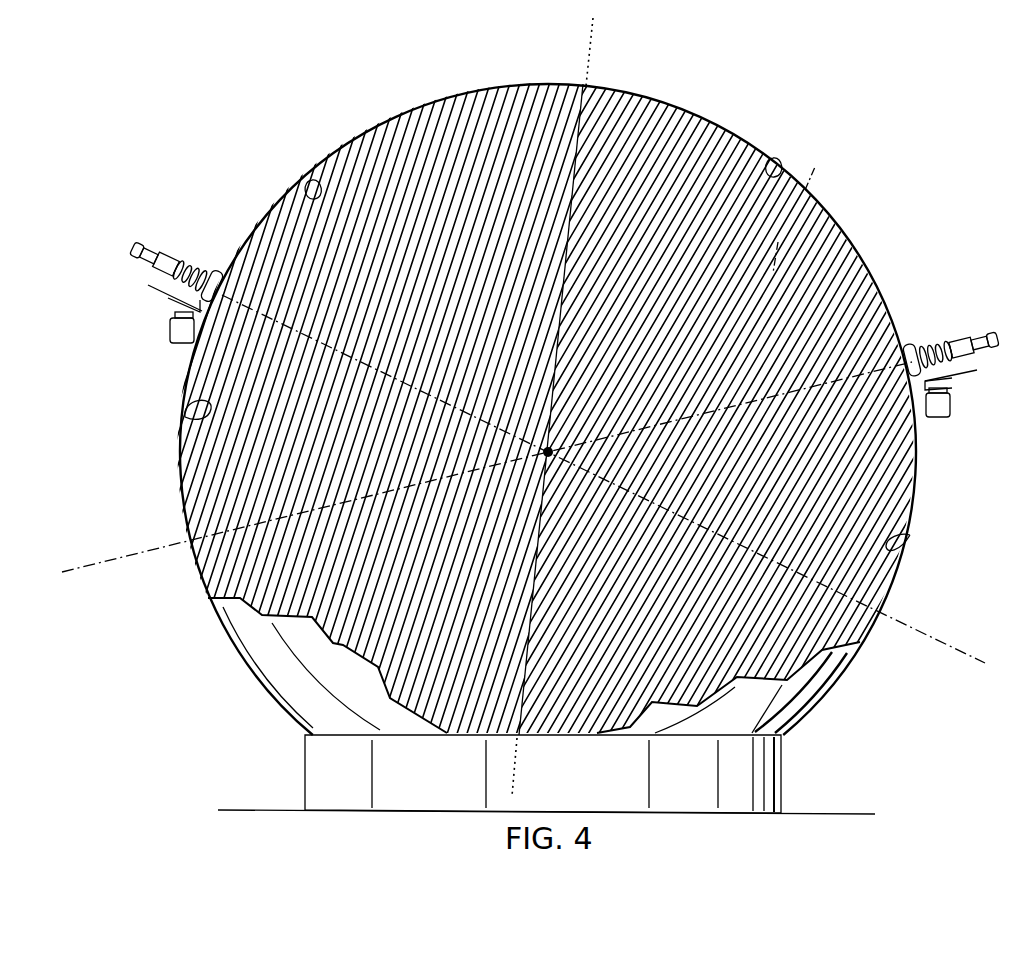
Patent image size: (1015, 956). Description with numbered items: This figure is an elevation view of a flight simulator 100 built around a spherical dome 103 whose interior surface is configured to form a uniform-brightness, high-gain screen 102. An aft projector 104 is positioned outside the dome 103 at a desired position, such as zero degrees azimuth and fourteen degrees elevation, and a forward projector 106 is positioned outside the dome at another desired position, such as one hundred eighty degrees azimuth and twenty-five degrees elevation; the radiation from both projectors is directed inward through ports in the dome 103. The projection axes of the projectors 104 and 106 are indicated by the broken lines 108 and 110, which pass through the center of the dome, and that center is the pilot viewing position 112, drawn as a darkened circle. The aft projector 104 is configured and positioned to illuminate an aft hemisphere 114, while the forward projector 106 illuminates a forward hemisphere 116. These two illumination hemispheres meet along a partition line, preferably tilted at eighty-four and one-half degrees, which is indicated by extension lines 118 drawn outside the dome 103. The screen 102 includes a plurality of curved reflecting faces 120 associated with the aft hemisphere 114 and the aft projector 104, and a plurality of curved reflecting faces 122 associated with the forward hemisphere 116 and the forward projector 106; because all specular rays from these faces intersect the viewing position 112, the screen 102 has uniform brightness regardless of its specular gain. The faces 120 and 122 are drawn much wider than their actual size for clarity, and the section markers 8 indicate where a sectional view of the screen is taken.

The flight simulator 100 is at (244, 176).
The uniform-brightness, high-gain screen 102 is at (653, 125).
The spherical dome 103 is at (257, 635).
The aft projector 104 is at (963, 330).
The forward projector 106 is at (178, 255).
The projection axis 108 is at (487, 467).
The projection axis 110 is at (603, 479).
The pilot viewing position 112 is at (555, 452).
The aft hemisphere 114 is at (185, 417).
The forward hemisphere 116 is at (910, 535).
The extension lines 118 is at (594, 49).
The curved reflecting faces 120 is at (312, 180).
The curved reflecting faces 122 is at (773, 158).
The section line 8 is at (815, 167).